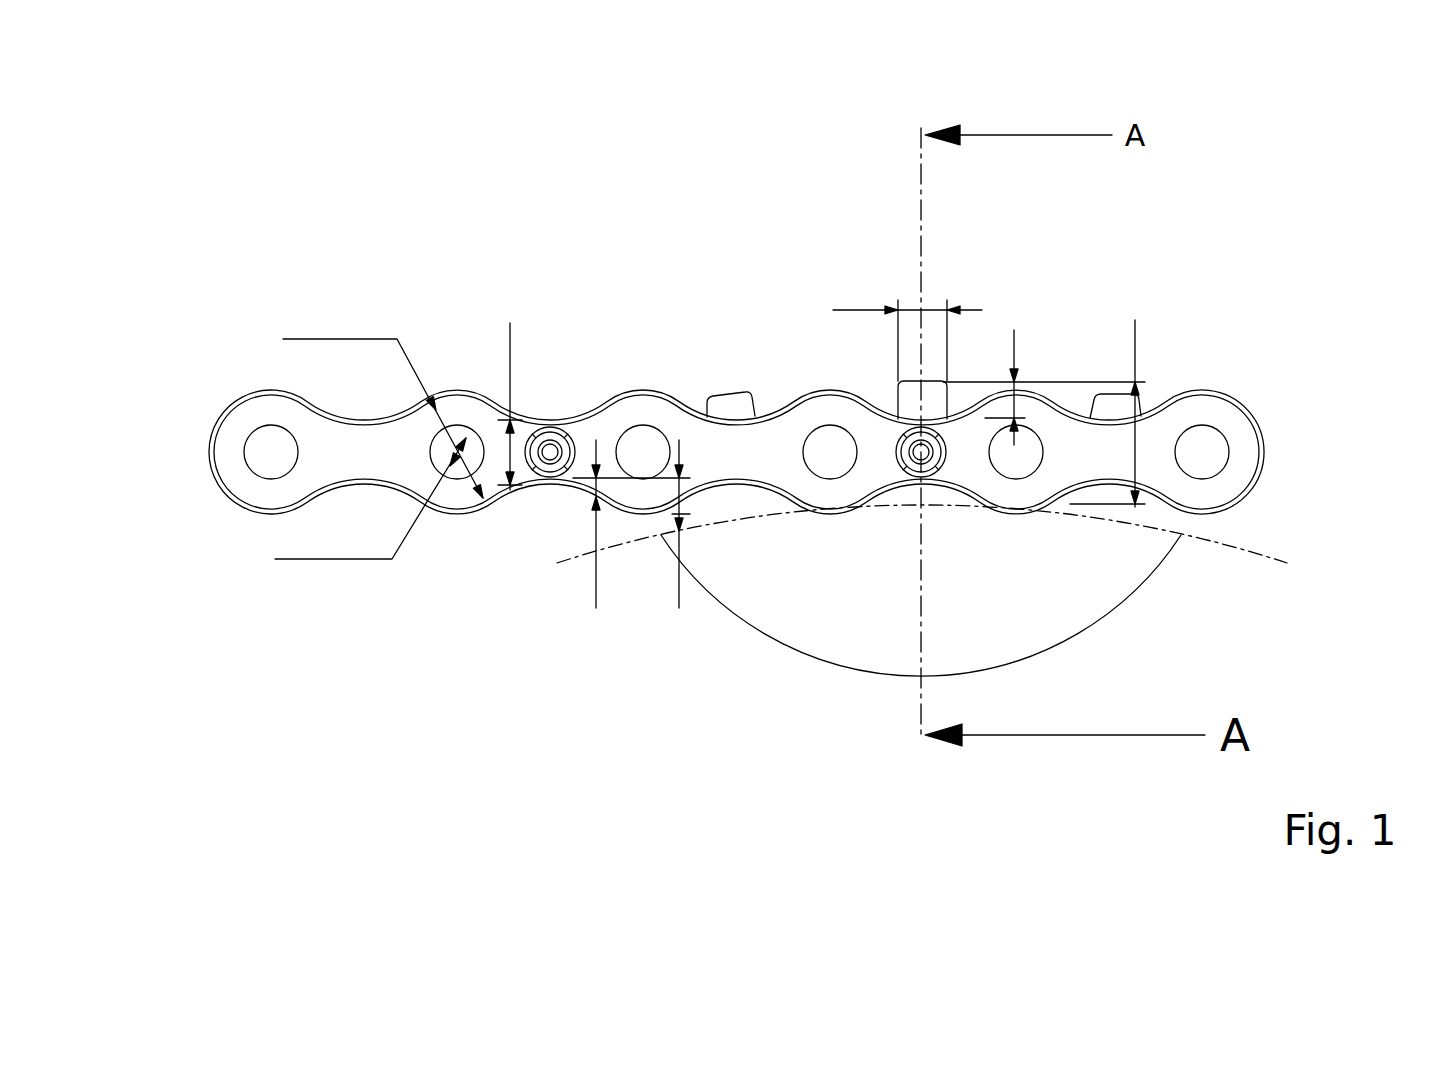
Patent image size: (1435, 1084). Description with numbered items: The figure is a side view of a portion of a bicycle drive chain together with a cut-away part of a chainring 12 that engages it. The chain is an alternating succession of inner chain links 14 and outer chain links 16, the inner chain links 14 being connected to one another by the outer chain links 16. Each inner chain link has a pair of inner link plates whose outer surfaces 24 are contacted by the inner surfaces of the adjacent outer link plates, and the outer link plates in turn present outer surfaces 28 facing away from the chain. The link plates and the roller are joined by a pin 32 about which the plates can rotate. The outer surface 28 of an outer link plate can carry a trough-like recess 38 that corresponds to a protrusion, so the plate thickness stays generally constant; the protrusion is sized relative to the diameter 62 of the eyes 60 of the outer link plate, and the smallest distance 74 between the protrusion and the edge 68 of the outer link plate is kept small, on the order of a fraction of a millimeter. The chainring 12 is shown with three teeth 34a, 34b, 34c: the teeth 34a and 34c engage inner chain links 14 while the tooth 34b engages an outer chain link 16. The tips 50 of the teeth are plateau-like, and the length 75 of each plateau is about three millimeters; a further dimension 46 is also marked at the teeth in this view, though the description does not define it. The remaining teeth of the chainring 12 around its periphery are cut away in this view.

The chainring 12 is at (1055, 623).
The inner chain link 14 is at (325, 515).
The outer chain link 16 is at (533, 498).
The outer surface of inner link plate 24 is at (368, 462).
The outer surface of outer link plate 28 is at (650, 462).
The pin 32 is at (485, 500).
The tooth 34a is at (755, 393).
The tooth 34b is at (893, 398).
The tooth 34c is at (1140, 398).
The trough-like recess 38 is at (552, 448).
The tab height 46 is at (1014, 335).
The tip of tooth 50 is at (718, 395).
The eye of outer link plate 60 is at (265, 455).
The diameter of eye 62 is at (292, 562).
The edge of outer link plate 68 is at (547, 490).
The smallest distance between protrusion and edge 74 is at (598, 583).
The length of plateau 75 is at (855, 308).